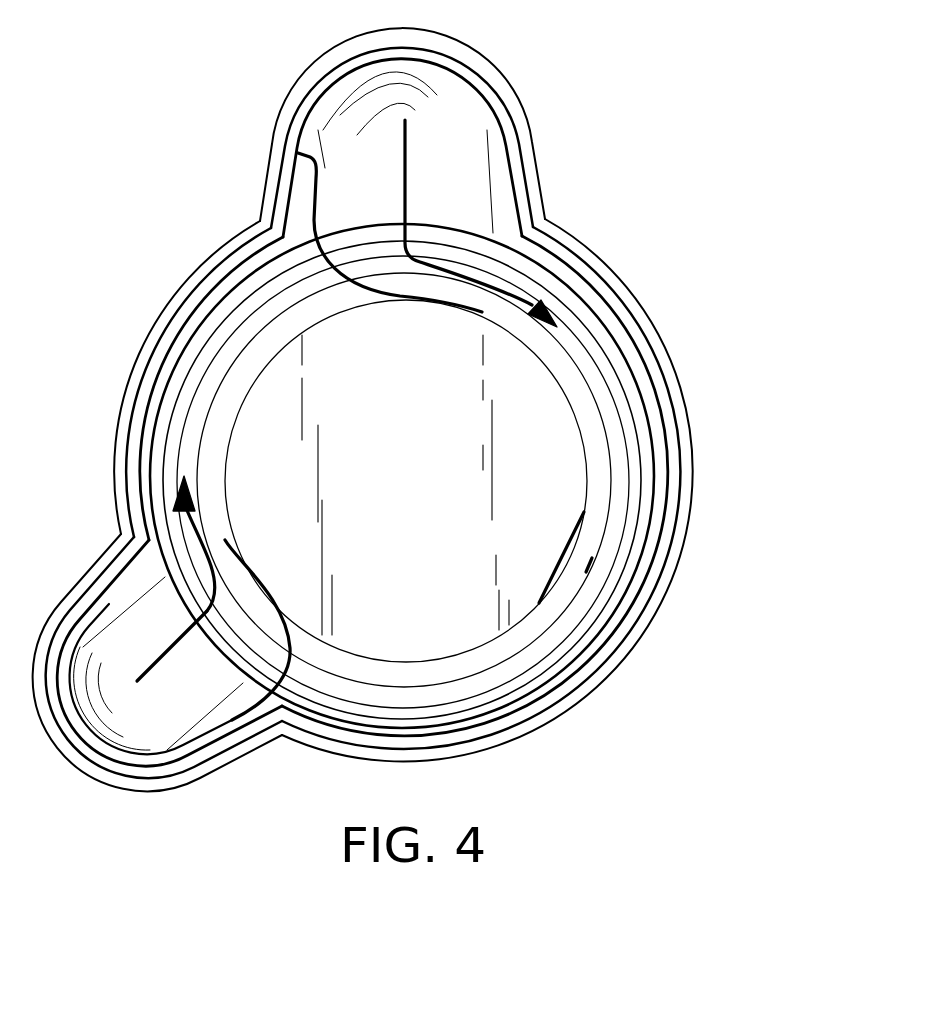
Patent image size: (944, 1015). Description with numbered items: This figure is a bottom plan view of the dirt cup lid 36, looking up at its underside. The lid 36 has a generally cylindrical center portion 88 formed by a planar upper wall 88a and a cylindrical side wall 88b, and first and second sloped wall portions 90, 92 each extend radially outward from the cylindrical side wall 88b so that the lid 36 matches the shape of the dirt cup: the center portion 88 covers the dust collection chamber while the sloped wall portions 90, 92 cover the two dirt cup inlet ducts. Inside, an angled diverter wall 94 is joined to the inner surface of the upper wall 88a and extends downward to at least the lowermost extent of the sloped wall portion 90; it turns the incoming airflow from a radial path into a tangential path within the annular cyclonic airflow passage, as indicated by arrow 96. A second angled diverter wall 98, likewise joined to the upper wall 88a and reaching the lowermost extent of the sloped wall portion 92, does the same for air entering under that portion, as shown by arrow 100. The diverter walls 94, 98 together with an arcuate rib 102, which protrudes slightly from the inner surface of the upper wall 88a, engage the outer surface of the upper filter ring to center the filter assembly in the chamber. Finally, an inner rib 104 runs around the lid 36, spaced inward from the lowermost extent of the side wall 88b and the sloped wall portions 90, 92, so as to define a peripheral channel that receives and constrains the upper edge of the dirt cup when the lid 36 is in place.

The lid 36 is at (652, 272).
The center portion 88 is at (695, 522).
The upper wall 88a is at (540, 428).
The side wall 88b is at (584, 690).
The first sloped wall portion 90 is at (522, 112).
The second sloped wall portion 92 is at (136, 793).
The angled diverter wall 94 is at (346, 298).
The arrow 96 is at (512, 293).
The second angled diverter wall 98 is at (253, 574).
The arrow 100 is at (195, 540).
The arcuate rib 102 is at (546, 578).
The inner rib 104 is at (215, 300).